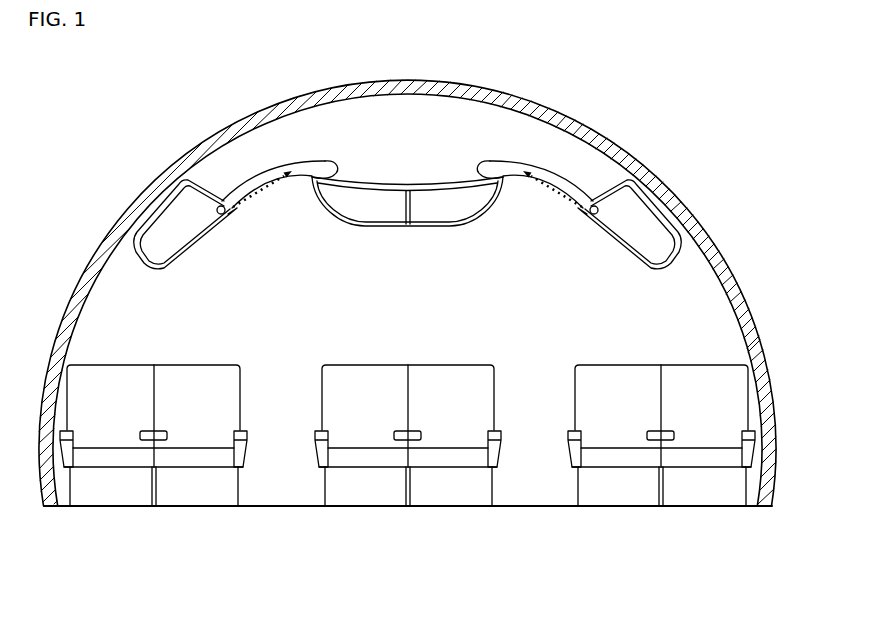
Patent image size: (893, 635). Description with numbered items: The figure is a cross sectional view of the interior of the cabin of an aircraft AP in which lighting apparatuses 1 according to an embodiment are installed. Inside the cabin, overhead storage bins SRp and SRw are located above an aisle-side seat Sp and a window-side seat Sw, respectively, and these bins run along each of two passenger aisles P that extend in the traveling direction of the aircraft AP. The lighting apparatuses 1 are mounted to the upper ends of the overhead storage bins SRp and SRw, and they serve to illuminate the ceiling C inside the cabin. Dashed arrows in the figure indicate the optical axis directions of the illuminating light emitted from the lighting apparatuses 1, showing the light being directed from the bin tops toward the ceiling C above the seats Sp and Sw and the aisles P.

The aircraft AP is at (182, 158).
The passenger aisle P is at (276, 505).
The overhead storage bin SRw is at (155, 253).
The overhead storage bin SRp is at (438, 213).
The lighting apparatus 1 is at (221, 205).
The ceiling C is at (264, 185).
The window-side seat Sw is at (224, 364).
The aisle-side seat Sp is at (451, 364).